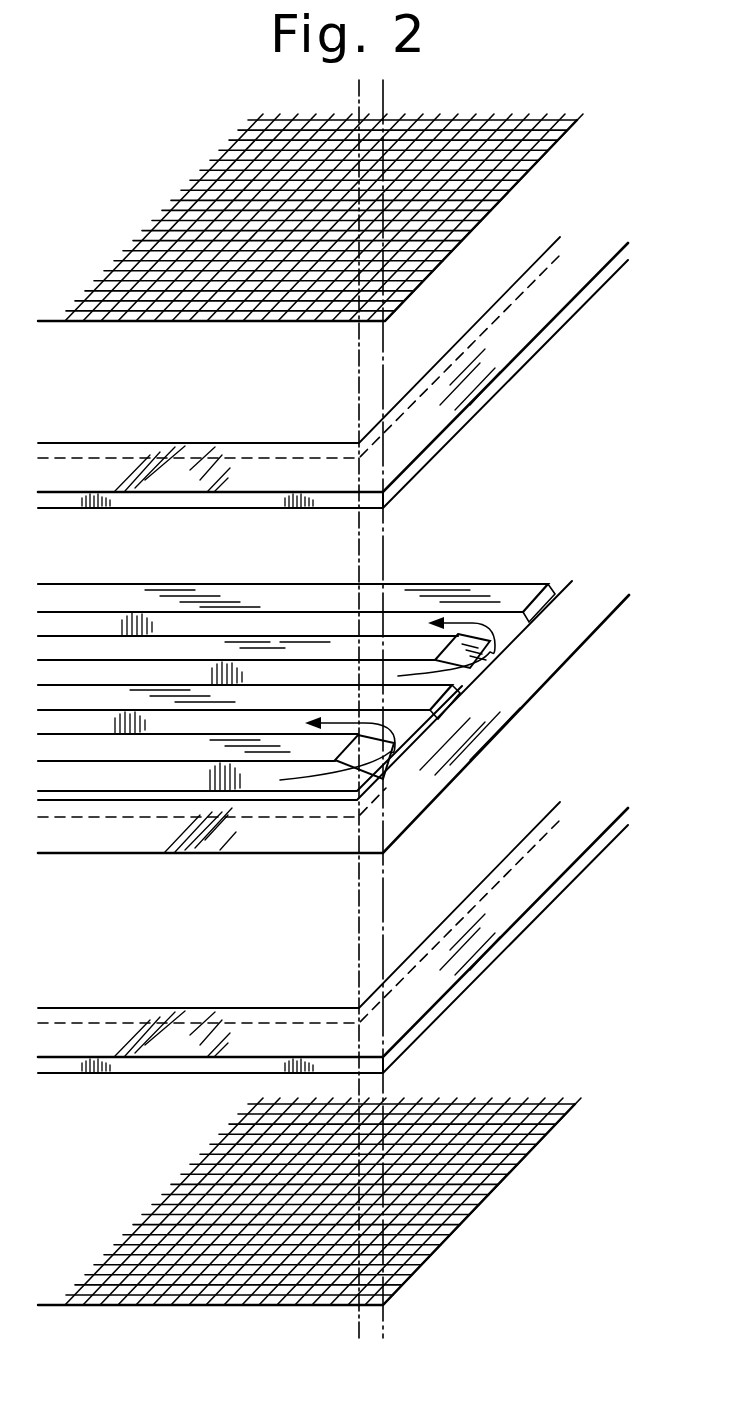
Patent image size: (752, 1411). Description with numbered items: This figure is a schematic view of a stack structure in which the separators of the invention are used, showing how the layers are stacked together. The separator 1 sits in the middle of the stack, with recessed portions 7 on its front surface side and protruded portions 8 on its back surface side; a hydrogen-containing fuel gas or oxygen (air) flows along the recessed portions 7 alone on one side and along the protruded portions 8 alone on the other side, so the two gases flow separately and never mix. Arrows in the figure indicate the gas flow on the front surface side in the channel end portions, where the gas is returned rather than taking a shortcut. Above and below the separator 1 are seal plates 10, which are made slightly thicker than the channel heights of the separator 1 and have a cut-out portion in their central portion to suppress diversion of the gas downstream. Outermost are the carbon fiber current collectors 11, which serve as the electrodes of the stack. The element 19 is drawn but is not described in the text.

The separator 1 is at (349, 748).
The recessed portions 7 is at (178, 798).
The protruded portions 8 is at (142, 745).
The seal plate 10 is at (558, 278).
The carbon fiber current collector 11 is at (537, 138).
The bent electrode terminal tab 19 is at (494, 652).